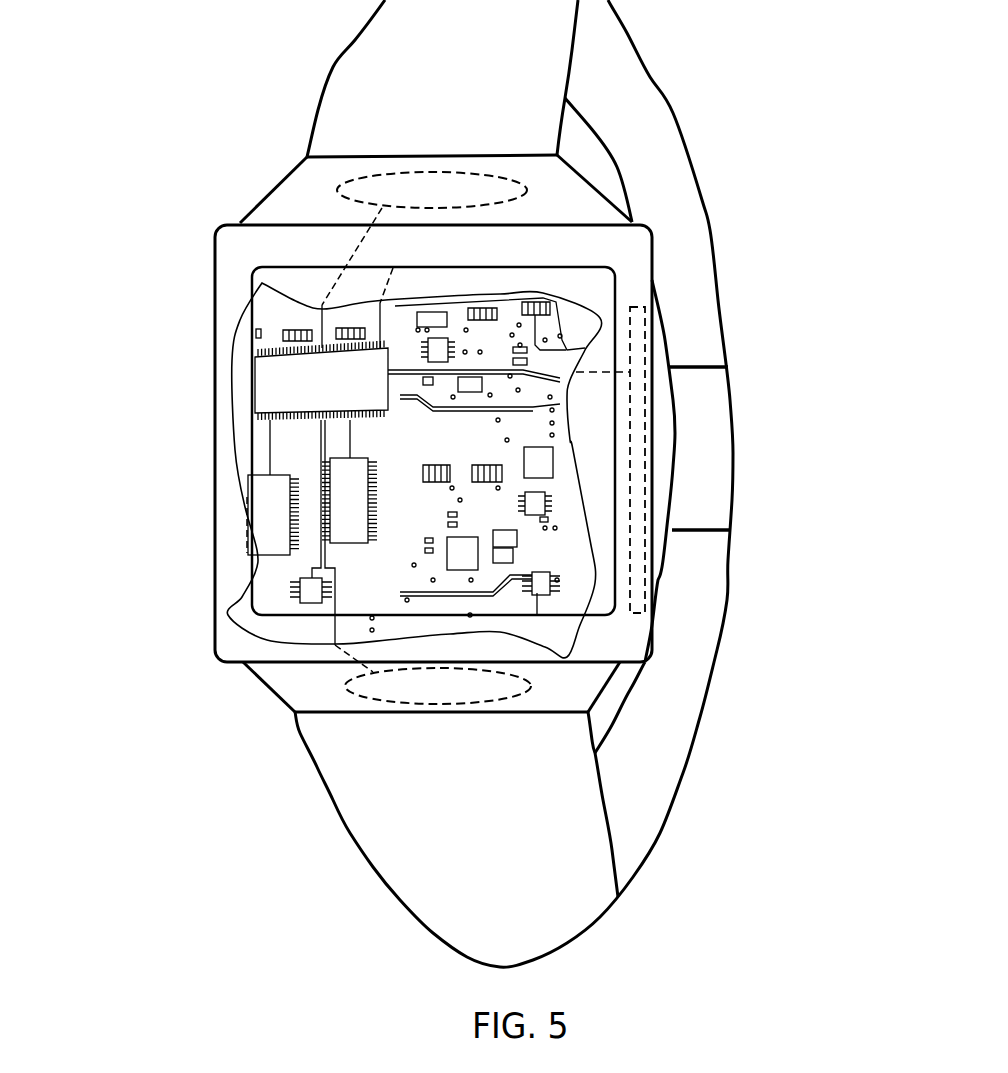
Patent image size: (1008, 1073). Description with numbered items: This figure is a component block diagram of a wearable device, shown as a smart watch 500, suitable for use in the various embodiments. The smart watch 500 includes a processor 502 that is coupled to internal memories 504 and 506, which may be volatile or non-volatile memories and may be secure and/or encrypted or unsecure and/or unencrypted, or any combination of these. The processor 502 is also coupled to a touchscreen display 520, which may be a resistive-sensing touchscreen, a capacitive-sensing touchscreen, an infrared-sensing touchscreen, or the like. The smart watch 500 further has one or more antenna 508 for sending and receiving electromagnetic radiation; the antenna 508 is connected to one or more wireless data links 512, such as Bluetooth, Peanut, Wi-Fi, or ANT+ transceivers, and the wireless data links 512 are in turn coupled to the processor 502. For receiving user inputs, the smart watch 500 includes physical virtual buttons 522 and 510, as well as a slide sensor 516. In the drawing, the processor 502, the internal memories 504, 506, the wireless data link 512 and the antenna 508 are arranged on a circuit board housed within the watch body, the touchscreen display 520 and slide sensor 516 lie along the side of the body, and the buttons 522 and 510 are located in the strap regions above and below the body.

The smart watch 500 is at (147, 118).
The processor 502 is at (253, 378).
The internal memory 504 is at (340, 458).
The internal memory 506 is at (251, 476).
The antenna 508 is at (557, 581).
The physical virtual button 510 is at (535, 683).
The wireless data link 512 is at (300, 578).
The slide sensor 516 is at (653, 477).
The touchscreen display 520 is at (617, 328).
The physical virtual button 522 is at (517, 181).